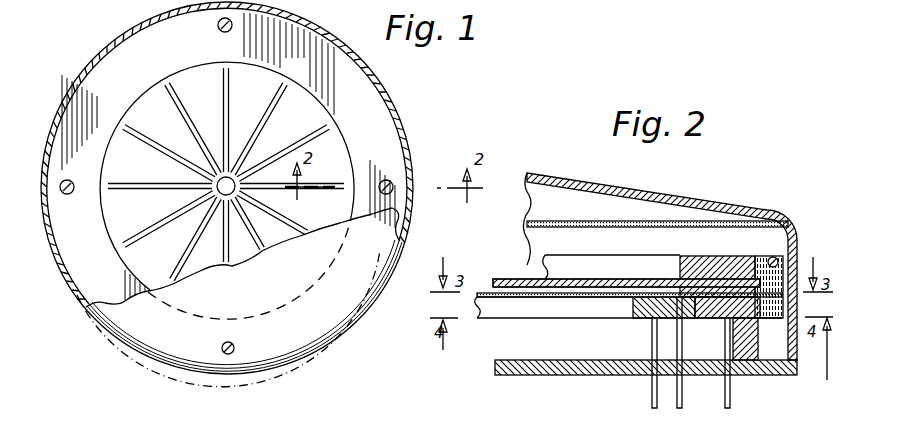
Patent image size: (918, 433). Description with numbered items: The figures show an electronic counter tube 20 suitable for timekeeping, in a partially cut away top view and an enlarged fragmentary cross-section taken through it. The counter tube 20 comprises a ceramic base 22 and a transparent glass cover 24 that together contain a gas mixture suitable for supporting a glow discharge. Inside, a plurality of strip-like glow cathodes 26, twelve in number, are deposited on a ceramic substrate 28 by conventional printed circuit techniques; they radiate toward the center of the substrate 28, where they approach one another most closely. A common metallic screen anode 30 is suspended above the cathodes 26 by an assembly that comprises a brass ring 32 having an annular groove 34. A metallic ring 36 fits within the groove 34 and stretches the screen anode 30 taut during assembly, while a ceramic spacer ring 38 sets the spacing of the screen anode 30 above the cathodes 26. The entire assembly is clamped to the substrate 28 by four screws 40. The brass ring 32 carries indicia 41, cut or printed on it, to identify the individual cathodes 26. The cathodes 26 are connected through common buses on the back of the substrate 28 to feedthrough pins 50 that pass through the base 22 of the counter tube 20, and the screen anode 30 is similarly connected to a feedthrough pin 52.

In FIG. 1, the electronic counter tube 20 is at (416, 111).
In FIG. 2, the ceramic base 22 is at (573, 375).
In FIG. 1, the transparent glass cover 24 is at (173, 360).
In FIG. 2, the transparent glass cover 24 is at (612, 185).
In FIG. 1, the glow cathodes 26 is at (270, 110).
In FIG. 2, the glow cathodes 26 is at (542, 297).
In FIG. 2, the ceramic substrate 28 is at (623, 305).
In FIG. 2, the screen anode 30 is at (527, 257).
In FIG. 1, the brass ring 32 is at (372, 143).
In FIG. 2, the brass ring 32 is at (695, 255).
In FIG. 2, the annular groove 34 is at (712, 275).
In FIG. 2, the metallic ring 36 is at (753, 257).
In FIG. 2, the ceramic spacer ring 38 is at (780, 265).
In FIG. 1, the screws 40 is at (224, 25).
In FIG. 2, the screws 40 is at (773, 255).
In FIG. 1, the indicia 41 is at (352, 115).
In FIG. 2, the feedthrough pins 50 is at (678, 408).
In FIG. 2, the feedthrough pin 52 is at (732, 395).